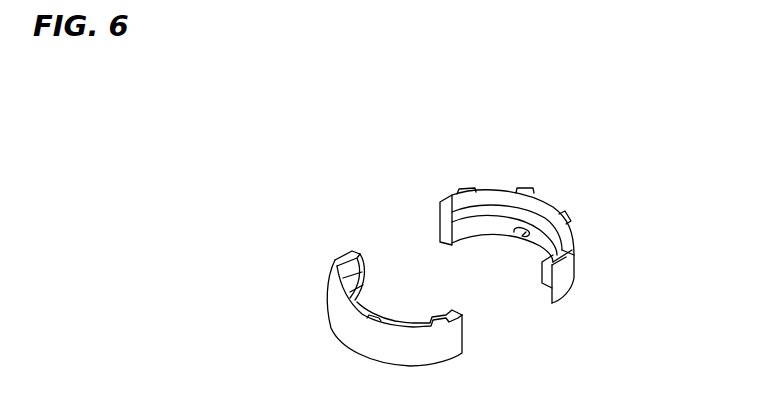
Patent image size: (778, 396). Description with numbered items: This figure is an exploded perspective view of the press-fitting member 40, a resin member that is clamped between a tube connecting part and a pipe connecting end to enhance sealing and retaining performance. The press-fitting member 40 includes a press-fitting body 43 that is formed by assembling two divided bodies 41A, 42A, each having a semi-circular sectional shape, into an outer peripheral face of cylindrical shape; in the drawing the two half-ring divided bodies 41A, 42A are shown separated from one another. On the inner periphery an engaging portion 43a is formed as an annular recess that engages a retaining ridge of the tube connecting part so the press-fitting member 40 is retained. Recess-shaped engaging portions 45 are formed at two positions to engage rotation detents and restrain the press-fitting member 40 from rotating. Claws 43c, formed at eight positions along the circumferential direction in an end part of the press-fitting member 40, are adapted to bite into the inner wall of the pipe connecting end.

The press-fitting member 40 is at (584, 216).
The claws 43c is at (527, 189).
The engaging portions 45 is at (524, 236).
The divided body 41A is at (576, 257).
The press-fitting body 43 is at (558, 280).
The engaging portion 43a is at (543, 279).
The divided body 42A is at (330, 318).